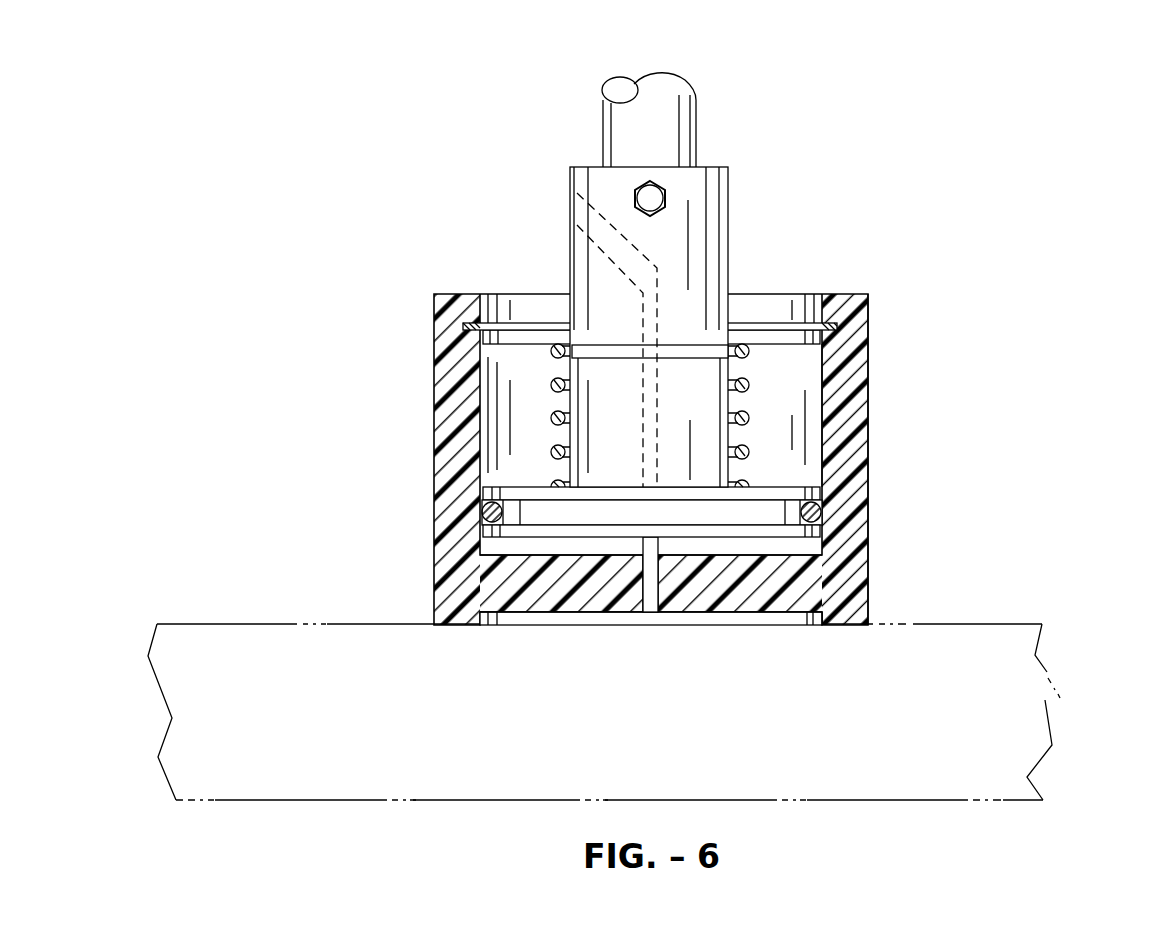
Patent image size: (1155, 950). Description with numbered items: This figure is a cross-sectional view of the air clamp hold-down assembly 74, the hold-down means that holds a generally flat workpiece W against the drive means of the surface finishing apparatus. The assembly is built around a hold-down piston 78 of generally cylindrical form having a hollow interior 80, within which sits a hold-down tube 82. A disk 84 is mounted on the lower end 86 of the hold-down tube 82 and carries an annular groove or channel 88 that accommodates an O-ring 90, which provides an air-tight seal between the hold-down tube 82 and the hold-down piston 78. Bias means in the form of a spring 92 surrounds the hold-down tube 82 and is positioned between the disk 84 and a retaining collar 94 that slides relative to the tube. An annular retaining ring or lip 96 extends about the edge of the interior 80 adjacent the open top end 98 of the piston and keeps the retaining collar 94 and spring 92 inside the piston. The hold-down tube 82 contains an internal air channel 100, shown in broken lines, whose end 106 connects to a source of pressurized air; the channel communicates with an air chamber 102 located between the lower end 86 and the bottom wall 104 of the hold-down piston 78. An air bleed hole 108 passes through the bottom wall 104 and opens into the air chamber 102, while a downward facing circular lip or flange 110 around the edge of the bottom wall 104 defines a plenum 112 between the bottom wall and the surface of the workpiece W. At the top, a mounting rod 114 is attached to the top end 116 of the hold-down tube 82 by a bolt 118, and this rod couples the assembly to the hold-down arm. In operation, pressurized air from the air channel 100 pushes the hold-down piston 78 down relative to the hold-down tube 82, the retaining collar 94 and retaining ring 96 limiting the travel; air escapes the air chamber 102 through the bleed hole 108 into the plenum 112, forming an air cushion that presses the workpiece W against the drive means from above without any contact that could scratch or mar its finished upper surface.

The air clamp hold-down assembly 74 is at (771, 411).
The hold-down piston 78 is at (855, 368).
The hollow interior 80 is at (810, 405).
The hold-down tube 82 is at (592, 175).
The disk 84 is at (816, 497).
The lower end 86 is at (727, 556).
The annular groove 88 is at (818, 517).
The O-ring 90 is at (790, 520).
The spring 92 is at (748, 410).
The retaining collar 94 is at (745, 322).
The retaining ring 96 is at (810, 320).
The open top end 98 is at (486, 278).
The internal air channel 100 is at (580, 254).
The air chamber 102 is at (492, 555).
The bottom wall 104 is at (512, 624).
The end of air channel 106 is at (582, 300).
The air bleed hole 108 is at (655, 624).
The circular lip 110 is at (848, 624).
The plenum 112 is at (590, 624).
The mounting rod 114 is at (670, 95).
The top end 116 is at (691, 96).
The bolt 118 is at (665, 205).
The workpiece W is at (960, 790).